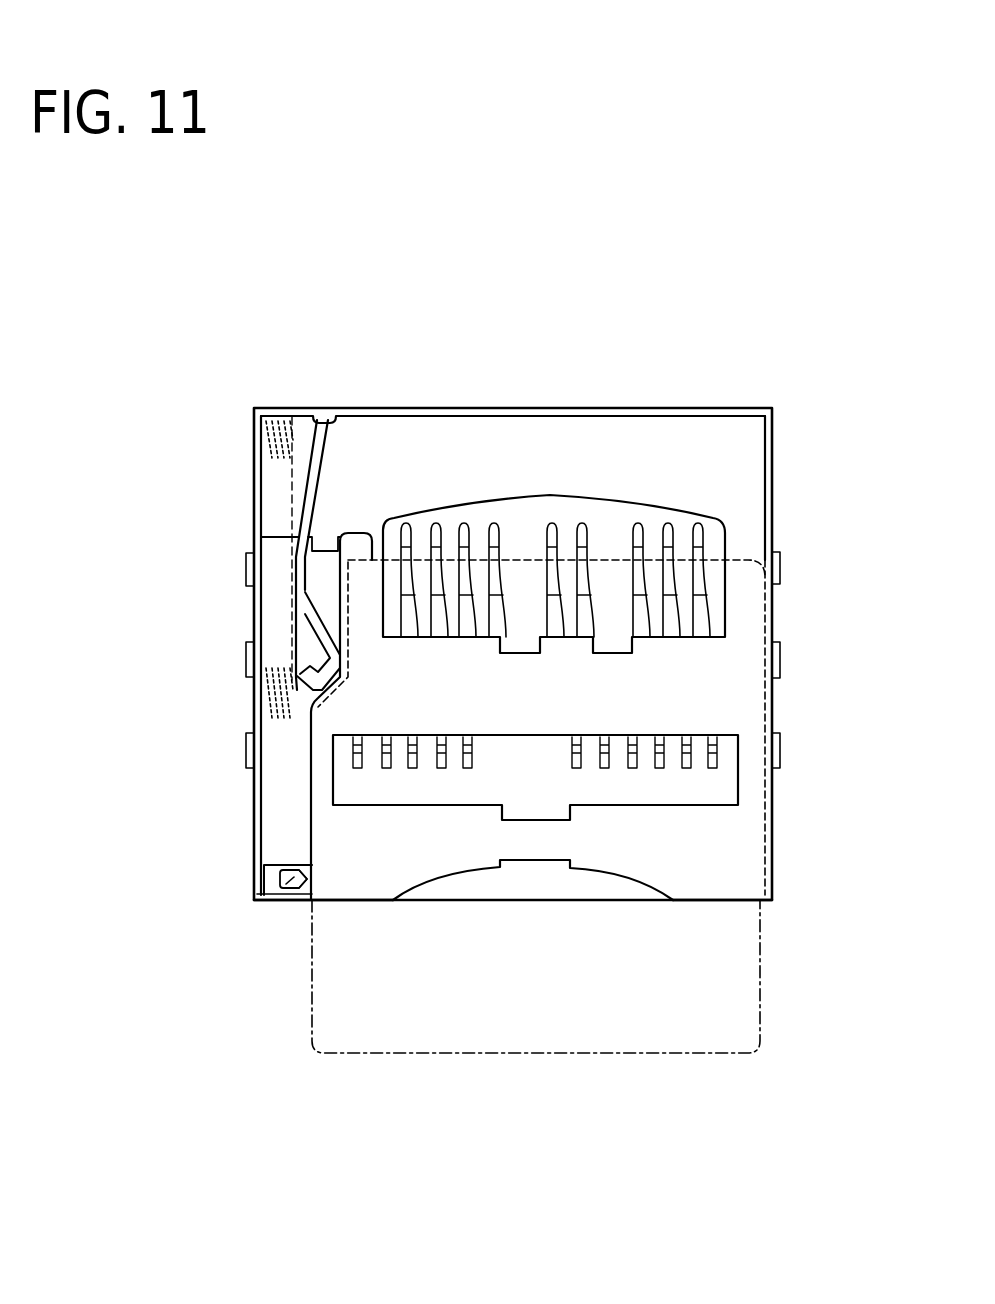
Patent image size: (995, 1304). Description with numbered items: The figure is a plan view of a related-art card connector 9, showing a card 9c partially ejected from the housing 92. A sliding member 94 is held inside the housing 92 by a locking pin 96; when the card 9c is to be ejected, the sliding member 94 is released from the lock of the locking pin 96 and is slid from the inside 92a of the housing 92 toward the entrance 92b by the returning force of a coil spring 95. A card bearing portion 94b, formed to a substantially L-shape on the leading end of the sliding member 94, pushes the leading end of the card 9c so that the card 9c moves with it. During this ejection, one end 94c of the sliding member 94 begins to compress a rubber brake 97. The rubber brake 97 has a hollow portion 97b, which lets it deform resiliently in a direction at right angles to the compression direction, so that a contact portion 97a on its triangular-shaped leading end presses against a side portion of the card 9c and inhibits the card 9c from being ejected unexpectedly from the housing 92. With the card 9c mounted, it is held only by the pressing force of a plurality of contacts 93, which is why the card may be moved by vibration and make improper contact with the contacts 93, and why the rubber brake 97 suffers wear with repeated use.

The card connector 9 is at (499, 384).
The housing 92 is at (282, 407).
The inside 92a is at (550, 420).
The entrance 92b is at (377, 902).
The contacts 93 is at (703, 587).
The sliding member 94 is at (268, 775).
The card bearing portion 94b is at (362, 543).
The one end of the sliding member 94c is at (288, 866).
The coil spring 95 is at (262, 437).
The locking pin 96 is at (312, 481).
The rubber brake 97 is at (257, 894).
The contact portion 97a is at (310, 885).
The hollow portion 97b is at (283, 886).
The card 9c is at (560, 1058).